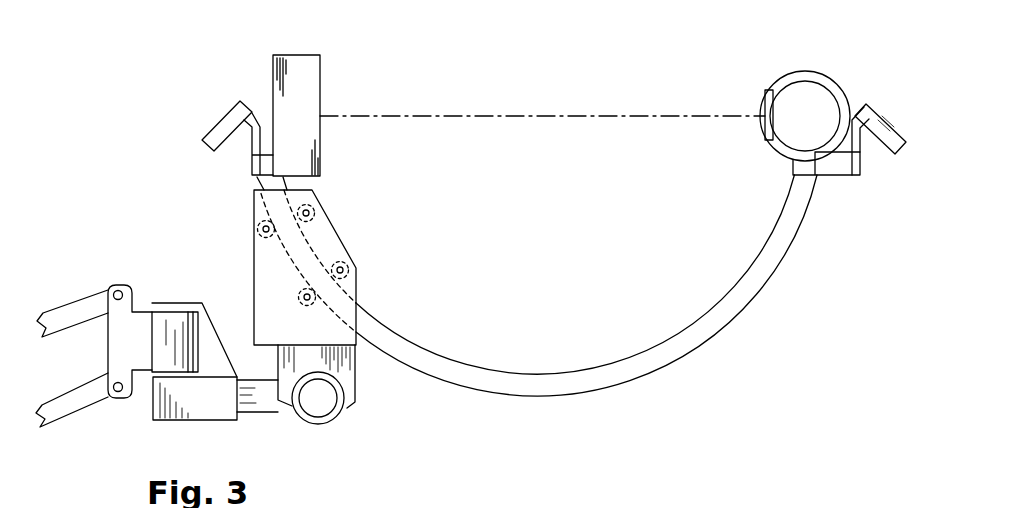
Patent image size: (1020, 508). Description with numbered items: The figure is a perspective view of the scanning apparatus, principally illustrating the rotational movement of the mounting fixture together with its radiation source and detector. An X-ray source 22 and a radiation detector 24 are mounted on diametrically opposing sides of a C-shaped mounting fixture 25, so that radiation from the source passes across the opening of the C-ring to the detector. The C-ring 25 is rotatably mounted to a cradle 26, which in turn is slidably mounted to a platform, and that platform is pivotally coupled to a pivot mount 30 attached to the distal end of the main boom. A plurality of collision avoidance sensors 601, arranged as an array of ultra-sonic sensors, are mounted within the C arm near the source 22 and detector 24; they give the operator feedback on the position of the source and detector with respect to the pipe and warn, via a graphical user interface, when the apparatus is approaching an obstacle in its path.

The X-ray source 22 is at (795, 71).
The radiation detector 24 is at (322, 72).
The C-shaped mounting fixture 25 is at (757, 296).
The cradle 26 is at (333, 232).
The pivot mount 30 is at (262, 414).
The collision avoidance sensor 601 is at (222, 120).